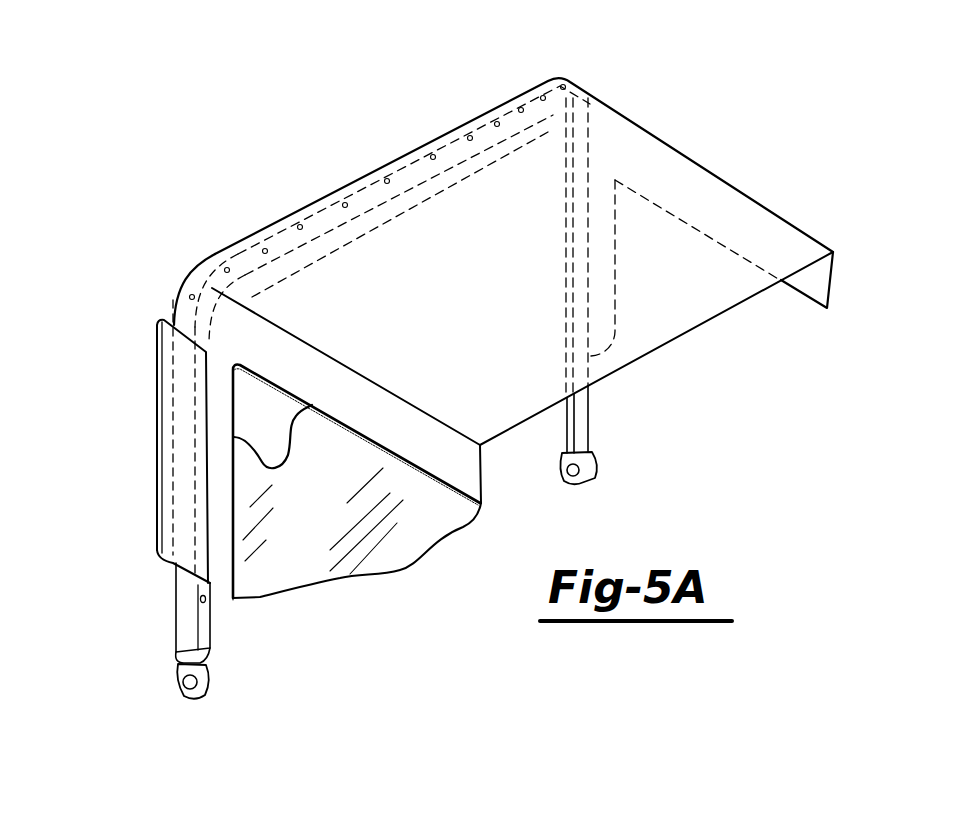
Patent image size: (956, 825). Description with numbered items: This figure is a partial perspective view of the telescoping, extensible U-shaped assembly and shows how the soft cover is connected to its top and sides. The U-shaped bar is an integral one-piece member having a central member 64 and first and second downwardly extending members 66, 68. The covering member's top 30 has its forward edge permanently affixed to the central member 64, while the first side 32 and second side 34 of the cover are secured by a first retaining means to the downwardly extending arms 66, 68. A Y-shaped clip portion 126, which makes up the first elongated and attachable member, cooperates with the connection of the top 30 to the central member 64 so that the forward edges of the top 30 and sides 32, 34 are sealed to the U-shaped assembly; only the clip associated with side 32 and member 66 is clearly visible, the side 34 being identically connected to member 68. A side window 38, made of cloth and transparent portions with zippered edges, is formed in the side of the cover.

The top 30 is at (360, 247).
The first side 32 is at (220, 407).
The second side 34 is at (723, 197).
The side window 38 is at (346, 537).
The central member 64 is at (413, 187).
The first downwardly extending member 66 is at (183, 490).
The second downwardly extending member 68 is at (567, 237).
The Y-shaped clip portion 126 is at (177, 318).